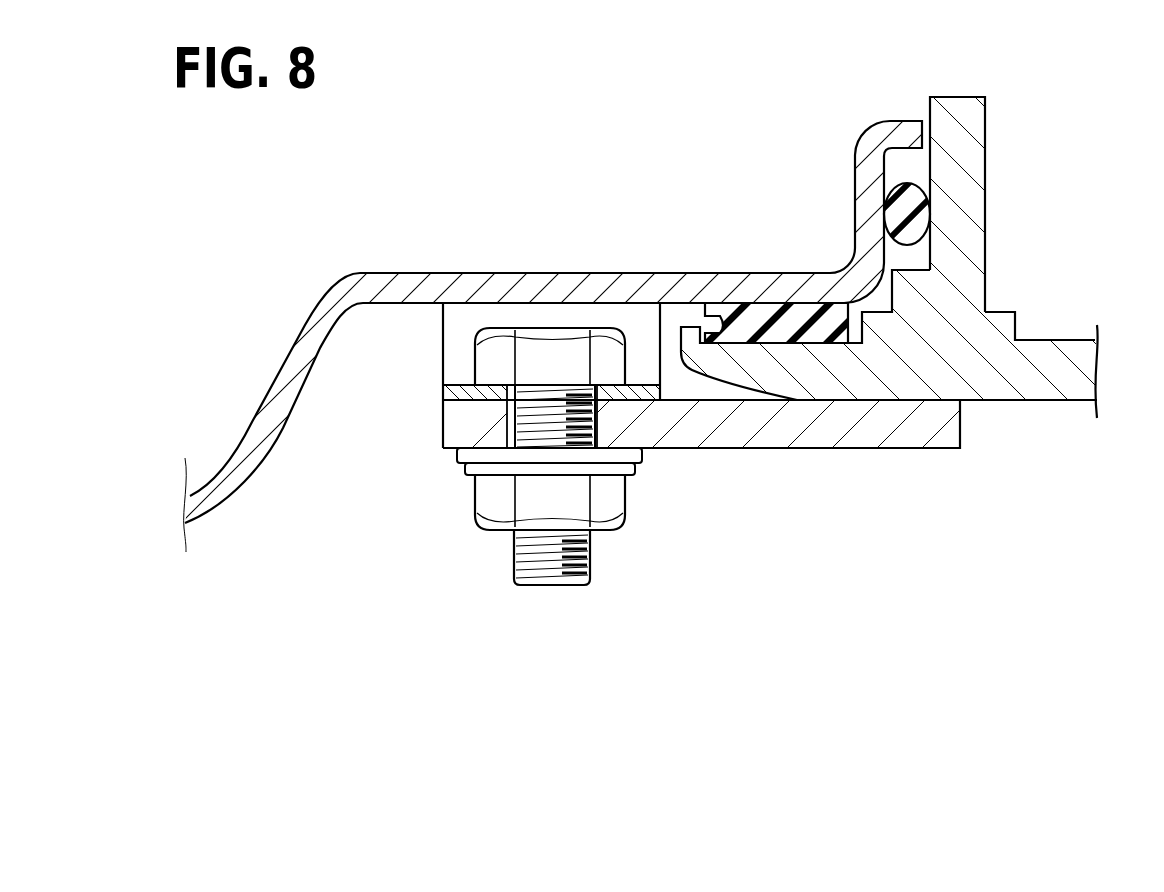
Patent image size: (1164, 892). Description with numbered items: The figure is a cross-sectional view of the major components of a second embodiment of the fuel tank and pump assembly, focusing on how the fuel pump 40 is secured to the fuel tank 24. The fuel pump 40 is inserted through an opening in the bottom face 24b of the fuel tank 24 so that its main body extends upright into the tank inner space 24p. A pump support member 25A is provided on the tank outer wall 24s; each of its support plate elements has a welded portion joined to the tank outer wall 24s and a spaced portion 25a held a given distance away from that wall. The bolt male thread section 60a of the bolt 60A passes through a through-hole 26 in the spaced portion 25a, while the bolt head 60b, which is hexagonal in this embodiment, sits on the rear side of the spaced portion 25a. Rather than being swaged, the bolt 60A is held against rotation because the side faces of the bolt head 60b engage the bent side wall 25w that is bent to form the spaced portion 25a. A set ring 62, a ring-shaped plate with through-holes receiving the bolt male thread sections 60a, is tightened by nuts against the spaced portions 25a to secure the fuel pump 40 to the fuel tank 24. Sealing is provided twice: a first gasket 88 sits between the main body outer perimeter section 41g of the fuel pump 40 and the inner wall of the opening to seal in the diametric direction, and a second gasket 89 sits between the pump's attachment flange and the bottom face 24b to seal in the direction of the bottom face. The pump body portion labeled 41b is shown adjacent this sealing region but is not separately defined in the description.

The fuel tank 24 is at (587, 356).
The bottom face 24b is at (363, 310).
The tank outer wall 24s is at (415, 318).
The tank inner space 24p is at (748, 148).
The pump support member 25A is at (408, 312).
The spaced portion 25a is at (462, 384).
The bent side wall 25w is at (633, 328).
The through-hole 26 is at (488, 450).
The bolt 60A is at (525, 444).
The bolt male thread section 60a is at (557, 568).
The bolt head 60b is at (537, 329).
The set ring 62 is at (894, 443).
The fuel pump 40 is at (767, 348).
The bottom wall 41b is at (1040, 403).
The main body outer perimeter section 41g is at (960, 130).
The first gasket 88 is at (917, 225).
The second gasket 89 is at (793, 322).